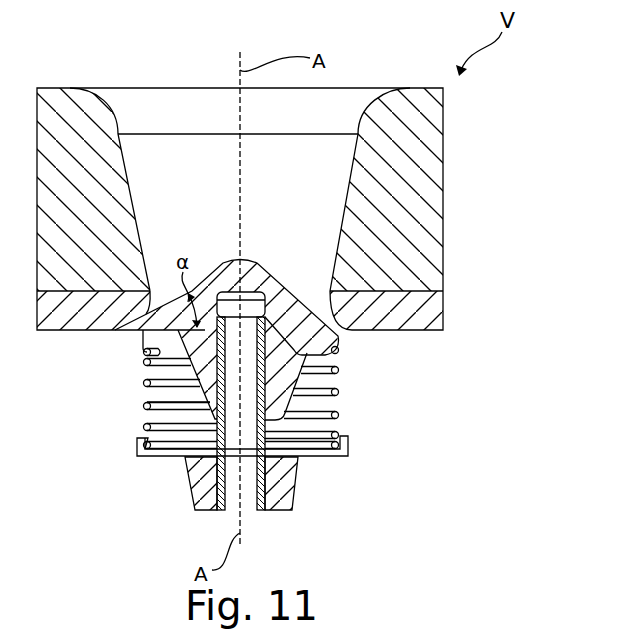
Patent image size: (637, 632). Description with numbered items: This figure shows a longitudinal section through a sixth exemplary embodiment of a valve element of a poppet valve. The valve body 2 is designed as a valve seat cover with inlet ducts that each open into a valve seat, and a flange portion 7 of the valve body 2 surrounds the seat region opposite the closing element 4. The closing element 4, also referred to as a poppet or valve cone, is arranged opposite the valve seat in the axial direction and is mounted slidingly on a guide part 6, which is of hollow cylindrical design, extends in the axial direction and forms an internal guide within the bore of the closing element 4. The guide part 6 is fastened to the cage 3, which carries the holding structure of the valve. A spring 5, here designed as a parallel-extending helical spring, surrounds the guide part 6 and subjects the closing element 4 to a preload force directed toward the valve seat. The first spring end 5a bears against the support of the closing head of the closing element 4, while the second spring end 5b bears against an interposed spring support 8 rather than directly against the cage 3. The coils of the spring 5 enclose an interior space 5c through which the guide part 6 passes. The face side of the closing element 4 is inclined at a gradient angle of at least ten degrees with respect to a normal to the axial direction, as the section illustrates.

The valve body 2 is at (410, 172).
The flange of valve seat body 7 is at (410, 297).
The closing element 4 is at (342, 340).
The spring 5 is at (256, 405).
The first spring end 5a is at (147, 352).
The second spring end 5b is at (347, 437).
The interior space 5c is at (160, 398).
The spring support 8 is at (325, 457).
The cage 3 is at (293, 511).
The guide part 6 is at (256, 512).